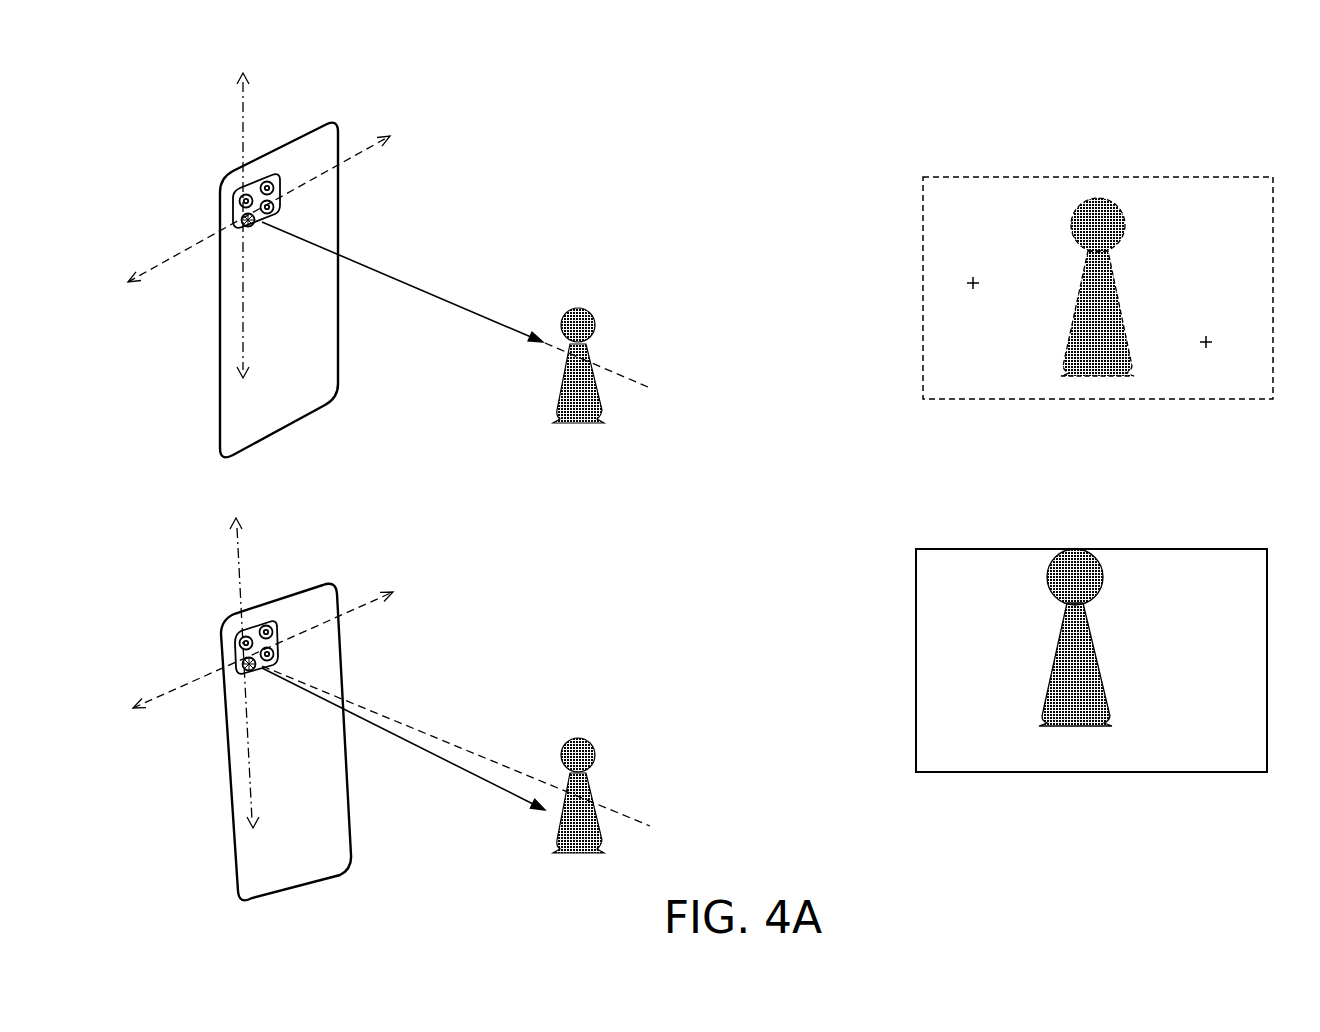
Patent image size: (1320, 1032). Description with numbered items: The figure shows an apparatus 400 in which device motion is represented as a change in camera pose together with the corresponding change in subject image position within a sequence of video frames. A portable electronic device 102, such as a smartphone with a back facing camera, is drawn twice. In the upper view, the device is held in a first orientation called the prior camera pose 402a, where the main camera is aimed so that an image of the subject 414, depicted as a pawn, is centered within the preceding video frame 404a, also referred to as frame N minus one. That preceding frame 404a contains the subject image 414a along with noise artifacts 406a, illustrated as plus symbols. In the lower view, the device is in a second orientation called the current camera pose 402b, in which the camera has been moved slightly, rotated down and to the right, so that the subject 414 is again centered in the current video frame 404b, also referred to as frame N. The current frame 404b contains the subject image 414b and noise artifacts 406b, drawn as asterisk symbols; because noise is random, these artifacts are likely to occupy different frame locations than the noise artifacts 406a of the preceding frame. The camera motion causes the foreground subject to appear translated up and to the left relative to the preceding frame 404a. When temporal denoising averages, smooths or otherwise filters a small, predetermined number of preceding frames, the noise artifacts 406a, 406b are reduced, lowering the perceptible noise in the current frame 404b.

The apparatus 400 is at (137, 36).
The portable electronic device 102 is at (280, 146).
The prior camera pose 402a is at (388, 200).
The current camera pose 402b is at (391, 669).
The subject 414 is at (597, 323).
The preceding video frame 404a is at (1038, 288).
The current video frame 404b is at (1041, 660).
The subject image of the preceding frame 414a is at (1118, 297).
The subject image of the current frame 414b is at (1093, 635).
The noise artifacts 406a is at (1095, 313).
The noise artifacts 406b is at (1089, 593).